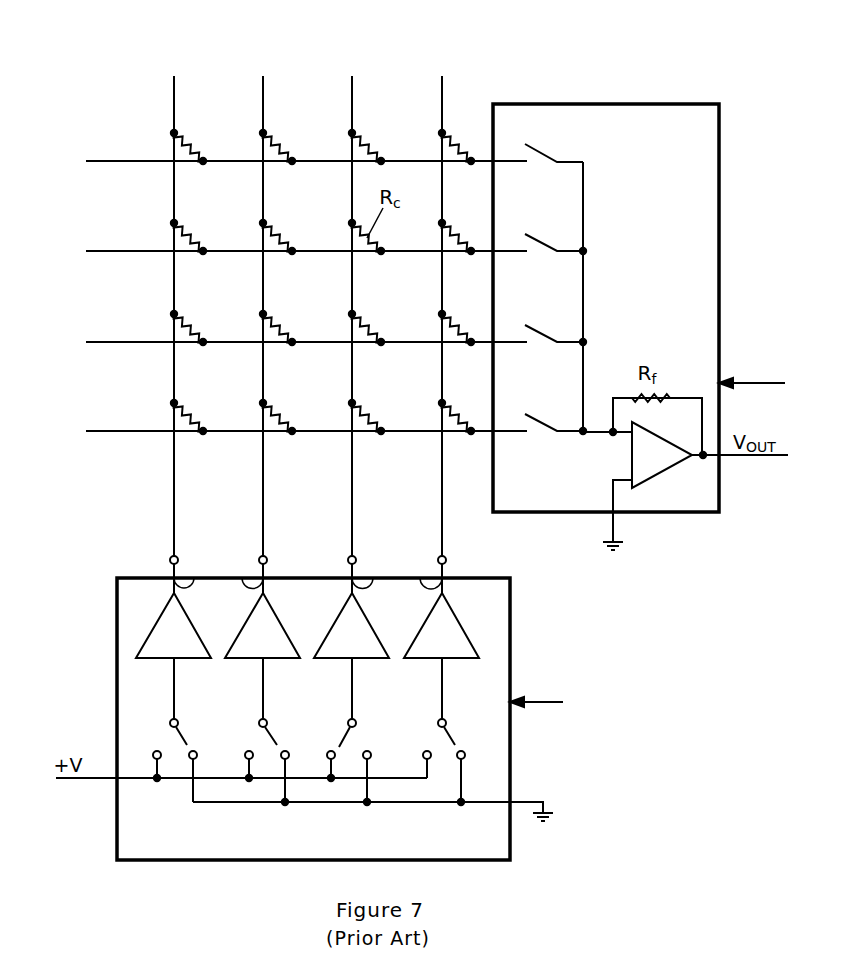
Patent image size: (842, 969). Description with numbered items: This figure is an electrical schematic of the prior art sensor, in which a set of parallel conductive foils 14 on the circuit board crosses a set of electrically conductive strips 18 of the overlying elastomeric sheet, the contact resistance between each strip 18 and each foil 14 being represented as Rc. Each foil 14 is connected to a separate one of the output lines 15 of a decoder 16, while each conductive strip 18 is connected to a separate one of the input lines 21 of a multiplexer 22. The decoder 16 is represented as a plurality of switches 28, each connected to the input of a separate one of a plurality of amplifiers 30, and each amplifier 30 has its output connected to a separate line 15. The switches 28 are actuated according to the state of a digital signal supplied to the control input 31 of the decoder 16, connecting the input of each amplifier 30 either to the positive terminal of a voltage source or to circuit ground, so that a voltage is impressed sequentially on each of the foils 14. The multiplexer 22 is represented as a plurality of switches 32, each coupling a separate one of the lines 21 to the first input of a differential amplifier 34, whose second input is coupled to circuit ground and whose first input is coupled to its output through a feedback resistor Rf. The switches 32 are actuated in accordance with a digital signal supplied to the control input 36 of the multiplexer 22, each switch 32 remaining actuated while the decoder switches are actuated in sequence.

The conductive foil 14 is at (263, 95).
The electrically conductive strip 18 is at (132, 251).
The input line 21 is at (505, 160).
The switch 32 is at (543, 150).
The multiplexer 22 is at (606, 308).
The differential amplifier 34 is at (685, 472).
The control input 36 is at (748, 385).
The output line 15 is at (240, 576).
The amplifier 30 is at (193, 626).
The switch 28 is at (183, 740).
The control input 31 is at (533, 697).
The decoder 16 is at (313, 719).